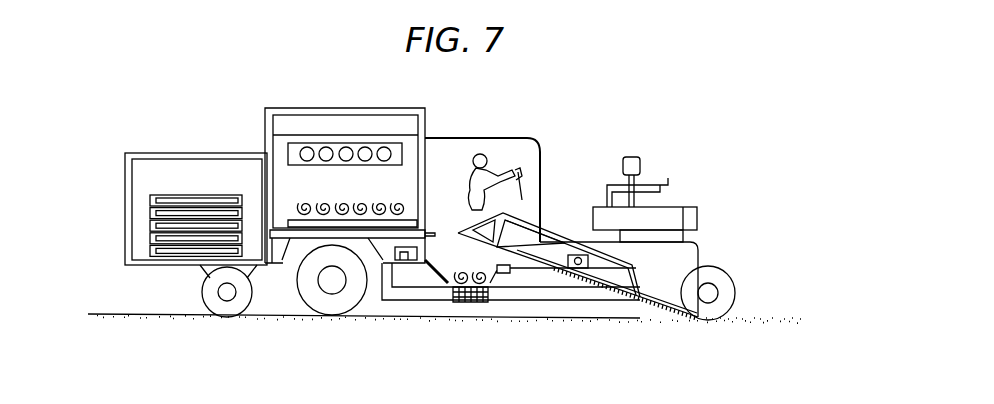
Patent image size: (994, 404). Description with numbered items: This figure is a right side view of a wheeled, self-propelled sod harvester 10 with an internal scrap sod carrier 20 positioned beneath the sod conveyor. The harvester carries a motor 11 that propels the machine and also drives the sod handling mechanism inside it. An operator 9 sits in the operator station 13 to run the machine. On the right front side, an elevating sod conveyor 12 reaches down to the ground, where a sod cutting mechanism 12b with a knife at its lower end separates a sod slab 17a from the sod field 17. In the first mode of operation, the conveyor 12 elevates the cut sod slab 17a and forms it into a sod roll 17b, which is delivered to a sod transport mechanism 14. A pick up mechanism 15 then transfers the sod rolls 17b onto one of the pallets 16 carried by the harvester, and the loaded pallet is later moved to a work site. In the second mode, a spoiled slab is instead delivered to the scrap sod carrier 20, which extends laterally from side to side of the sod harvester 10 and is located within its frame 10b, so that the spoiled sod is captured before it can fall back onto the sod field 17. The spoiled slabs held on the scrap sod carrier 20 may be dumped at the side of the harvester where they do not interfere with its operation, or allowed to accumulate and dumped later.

The sod harvester 10 is at (733, 137).
The frame 10b is at (515, 295).
The operator 9 is at (496, 176).
The motor 11 is at (650, 215).
The elevating sod conveyor 12 is at (637, 303).
The sod cutting mechanism 12b is at (667, 313).
The operator station 13 is at (500, 138).
The sod transport mechanism 14 is at (352, 222).
The pick up mechanism 15 is at (308, 150).
The pallet 16 is at (150, 224).
The sod field 17 is at (762, 313).
The sod slab 17a is at (640, 297).
The sod roll 17b is at (397, 203).
The scrap sod carrier 20 is at (440, 281).